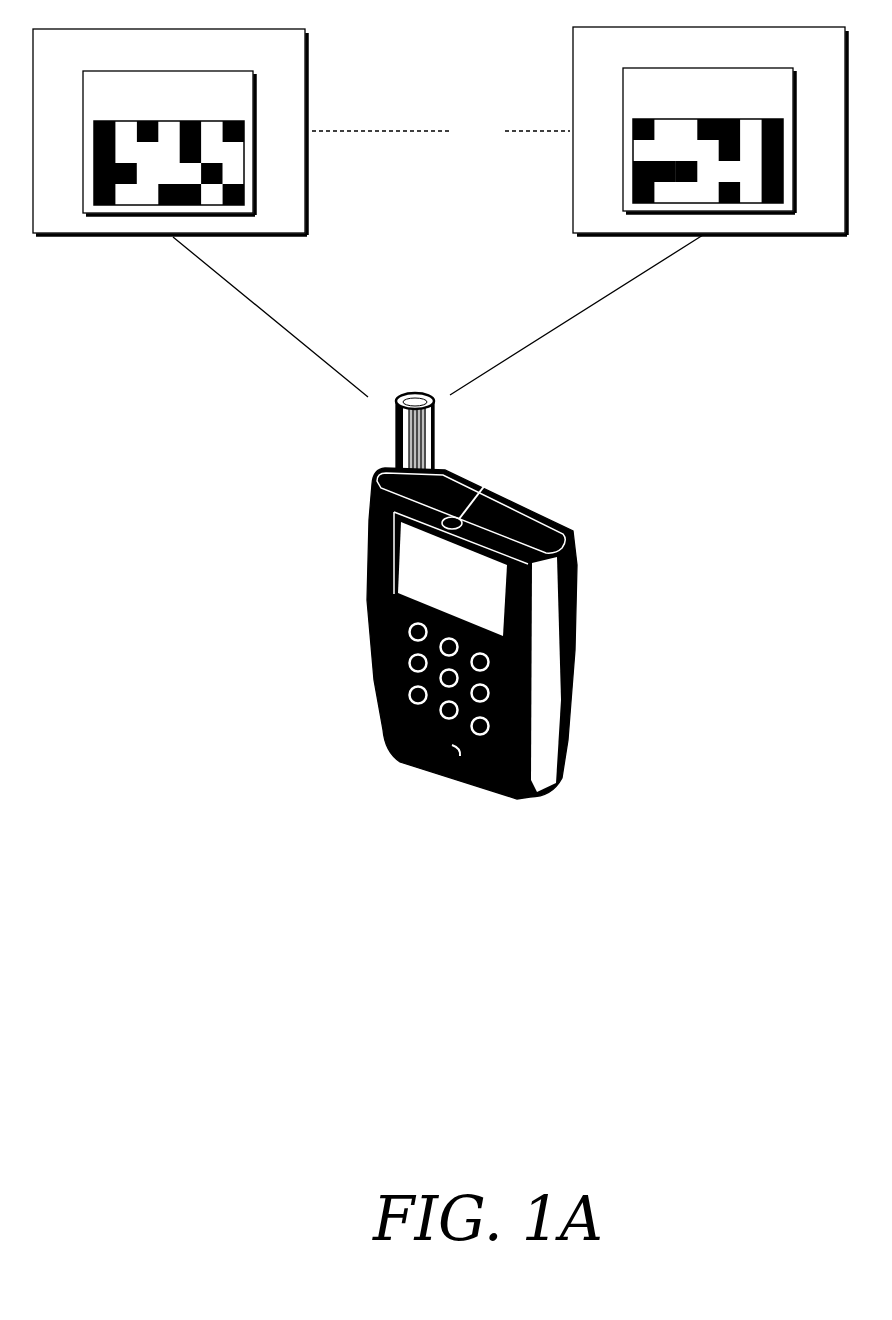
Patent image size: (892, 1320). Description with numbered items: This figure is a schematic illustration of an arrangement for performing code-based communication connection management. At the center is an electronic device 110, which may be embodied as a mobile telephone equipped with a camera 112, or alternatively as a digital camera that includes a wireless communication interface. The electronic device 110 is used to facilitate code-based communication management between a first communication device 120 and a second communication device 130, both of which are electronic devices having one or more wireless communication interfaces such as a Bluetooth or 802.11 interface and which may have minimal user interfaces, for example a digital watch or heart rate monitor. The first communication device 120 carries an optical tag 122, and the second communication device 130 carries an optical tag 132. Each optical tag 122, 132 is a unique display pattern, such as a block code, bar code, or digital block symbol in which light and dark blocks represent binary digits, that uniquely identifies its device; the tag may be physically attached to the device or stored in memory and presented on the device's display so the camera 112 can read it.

The electronic device 110 is at (472, 614).
The camera 112 is at (459, 520).
The first communication device 120 is at (223, 64).
The optical tag 122 is at (243, 106).
The second communication device 130 is at (762, 62).
The optical tag 132 is at (783, 102).